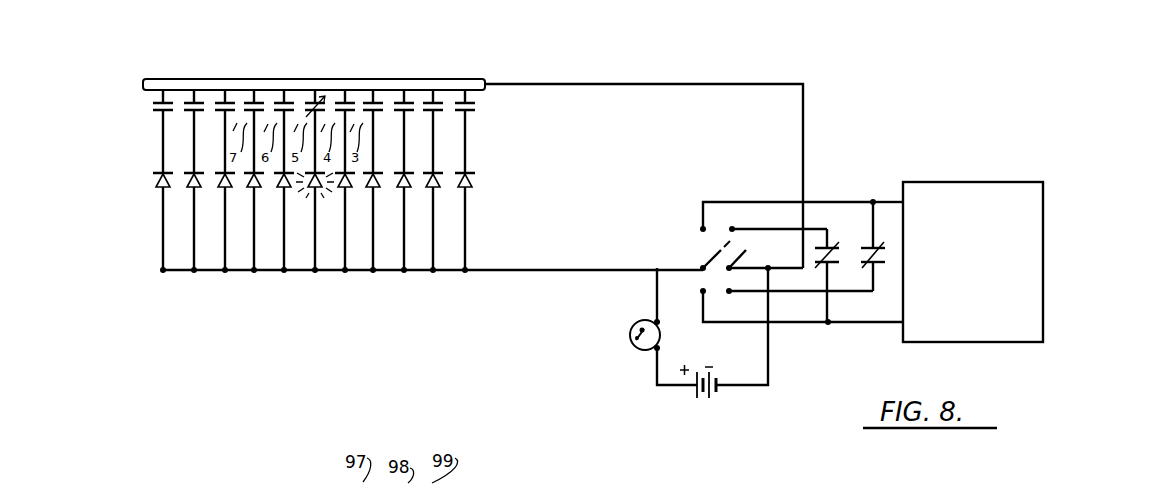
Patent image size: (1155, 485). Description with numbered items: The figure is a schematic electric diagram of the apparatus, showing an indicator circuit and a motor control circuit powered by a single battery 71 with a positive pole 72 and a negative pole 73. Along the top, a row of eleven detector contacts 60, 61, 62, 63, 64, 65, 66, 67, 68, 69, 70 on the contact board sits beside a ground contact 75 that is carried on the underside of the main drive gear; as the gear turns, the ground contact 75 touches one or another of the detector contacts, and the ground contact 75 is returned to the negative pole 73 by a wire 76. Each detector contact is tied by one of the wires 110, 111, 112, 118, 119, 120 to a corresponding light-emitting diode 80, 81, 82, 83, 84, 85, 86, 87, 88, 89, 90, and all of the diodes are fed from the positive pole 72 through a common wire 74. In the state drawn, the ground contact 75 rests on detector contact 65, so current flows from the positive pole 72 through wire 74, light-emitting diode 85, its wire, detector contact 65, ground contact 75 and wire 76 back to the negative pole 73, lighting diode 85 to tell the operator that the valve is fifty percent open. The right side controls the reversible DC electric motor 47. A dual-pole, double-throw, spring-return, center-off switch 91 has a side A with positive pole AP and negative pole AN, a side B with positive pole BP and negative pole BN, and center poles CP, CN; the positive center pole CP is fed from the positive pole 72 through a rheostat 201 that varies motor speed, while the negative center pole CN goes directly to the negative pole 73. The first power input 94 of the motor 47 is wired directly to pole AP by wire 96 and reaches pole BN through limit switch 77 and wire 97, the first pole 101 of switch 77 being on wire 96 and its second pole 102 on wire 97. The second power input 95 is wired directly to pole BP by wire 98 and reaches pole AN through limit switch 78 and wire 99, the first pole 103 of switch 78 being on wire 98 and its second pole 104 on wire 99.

The reversible DC electric motor 47 is at (1045, 224).
The detector contact 60 is at (472, 115).
The detector contact 61 is at (445, 115).
The detector contact 62 is at (394, 115).
The detector contact 63 is at (368, 114).
The detector contact 64 is at (339, 113).
The detector contact 65 is at (306, 112).
The detector contact 66 is at (278, 116).
The detector contact 67 is at (247, 115).
The detector contact 68 is at (218, 115).
The detector contact 69 is at (188, 114).
The detector contact 70 is at (158, 116).
The battery 71 is at (698, 356).
The positive pole of battery 72 is at (693, 388).
The negative pole of battery 73 is at (721, 388).
The wire 74 is at (510, 271).
The ground contact 75 is at (482, 82).
The wire 76 is at (695, 83).
The limit switch 77 is at (873, 200).
The limit switch 78 is at (835, 240).
The light-emitting diode 80 is at (470, 190).
The light-emitting diode 81 is at (436, 217).
The light-emitting diode 82 is at (410, 192).
The light-emitting diode 83 is at (380, 192).
The light-emitting diode 84 is at (355, 192).
The light-emitting diode 85 is at (312, 192).
The light-emitting diode 86 is at (280, 192).
The light-emitting diode 87 is at (252, 192).
The light-emitting diode 88 is at (222, 191).
The light-emitting diode 89 is at (193, 190).
The light-emitting diode 90 is at (158, 187).
The dual-pole double-throw switch 91 is at (712, 250).
The first power input 94 is at (896, 202).
The second power input 95 is at (900, 325).
The wire 96 is at (829, 226).
The wire 97 is at (838, 292).
The wire 98 is at (800, 324).
The wire 99 is at (823, 227).
The first pole of switch 77 101 is at (882, 252).
The second pole of switch 77 102 is at (882, 263).
The first pole of switch 78 103 is at (876, 290).
The second pole of switch 78 104 is at (747, 241).
The wire 110 is at (467, 138).
The wire 111 is at (435, 146).
The wire 112 is at (405, 156).
The wire 118 is at (225, 142).
The wire 119 is at (194, 134).
The wire 120 is at (163, 128).
The rheostat 201 is at (628, 336).
The side A of switch 91 A is at (724, 220).
The side B of switch 91 B is at (710, 324).
The positive pole of side A AP is at (700, 228).
The negative pole of side A AN is at (735, 230).
The positive pole of side B BP is at (700, 291).
The negative pole of side B BN is at (732, 294).
The positive center pole CP is at (700, 268).
The negative center pole CN is at (732, 272).